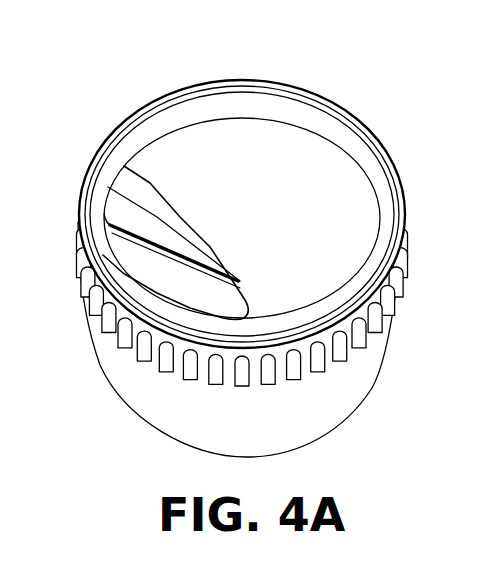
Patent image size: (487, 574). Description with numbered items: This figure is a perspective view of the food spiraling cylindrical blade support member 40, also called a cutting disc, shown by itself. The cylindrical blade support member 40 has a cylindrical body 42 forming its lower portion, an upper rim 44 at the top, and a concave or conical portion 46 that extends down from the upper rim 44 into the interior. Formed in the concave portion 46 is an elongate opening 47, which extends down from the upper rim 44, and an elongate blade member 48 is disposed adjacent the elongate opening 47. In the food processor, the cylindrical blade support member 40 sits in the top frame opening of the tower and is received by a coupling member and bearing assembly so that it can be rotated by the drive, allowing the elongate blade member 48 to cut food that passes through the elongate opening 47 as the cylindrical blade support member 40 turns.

The cylindrical blade support member 40 is at (358, 400).
The cylindrical body 42 is at (395, 313).
The upper rim 44 is at (229, 81).
The concave portion 46 is at (318, 183).
The elongate opening 47 is at (84, 210).
The elongate blade member 48 is at (132, 263).